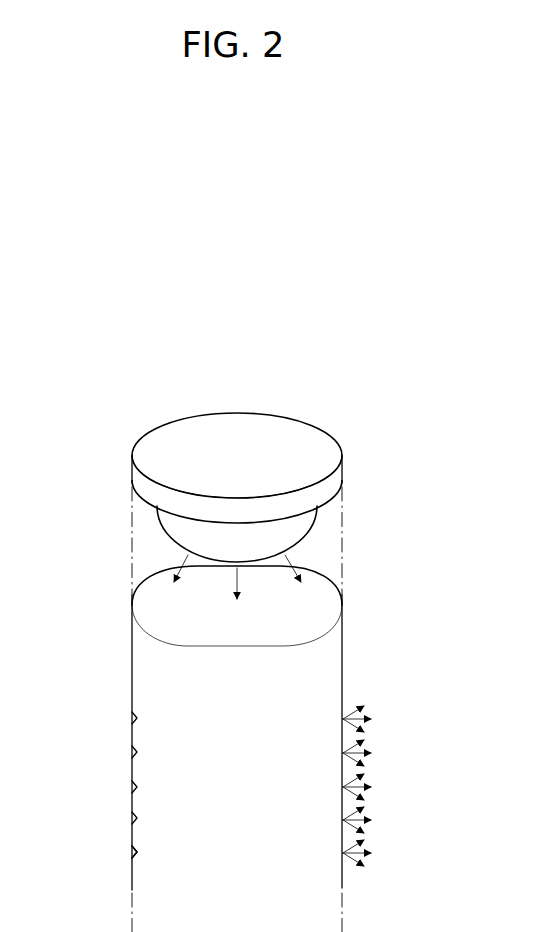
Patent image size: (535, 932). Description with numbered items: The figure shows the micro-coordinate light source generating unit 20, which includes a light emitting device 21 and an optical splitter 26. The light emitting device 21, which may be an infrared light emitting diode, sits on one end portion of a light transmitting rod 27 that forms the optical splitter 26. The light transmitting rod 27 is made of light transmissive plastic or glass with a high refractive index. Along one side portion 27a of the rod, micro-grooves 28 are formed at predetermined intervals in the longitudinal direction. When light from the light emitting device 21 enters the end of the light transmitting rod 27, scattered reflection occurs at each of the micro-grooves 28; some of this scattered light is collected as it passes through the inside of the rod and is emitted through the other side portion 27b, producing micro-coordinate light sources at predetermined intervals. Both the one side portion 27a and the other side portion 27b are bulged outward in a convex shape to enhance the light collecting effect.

The micro-coordinate light source generating unit 20 is at (77, 436).
The light emitting device 21 is at (308, 525).
The optical splitter 26 is at (80, 842).
The light transmitting rod 27 is at (145, 878).
The one side portion 27a is at (132, 803).
The other side portion 27b is at (343, 880).
The micro-grooves 28 is at (137, 852).